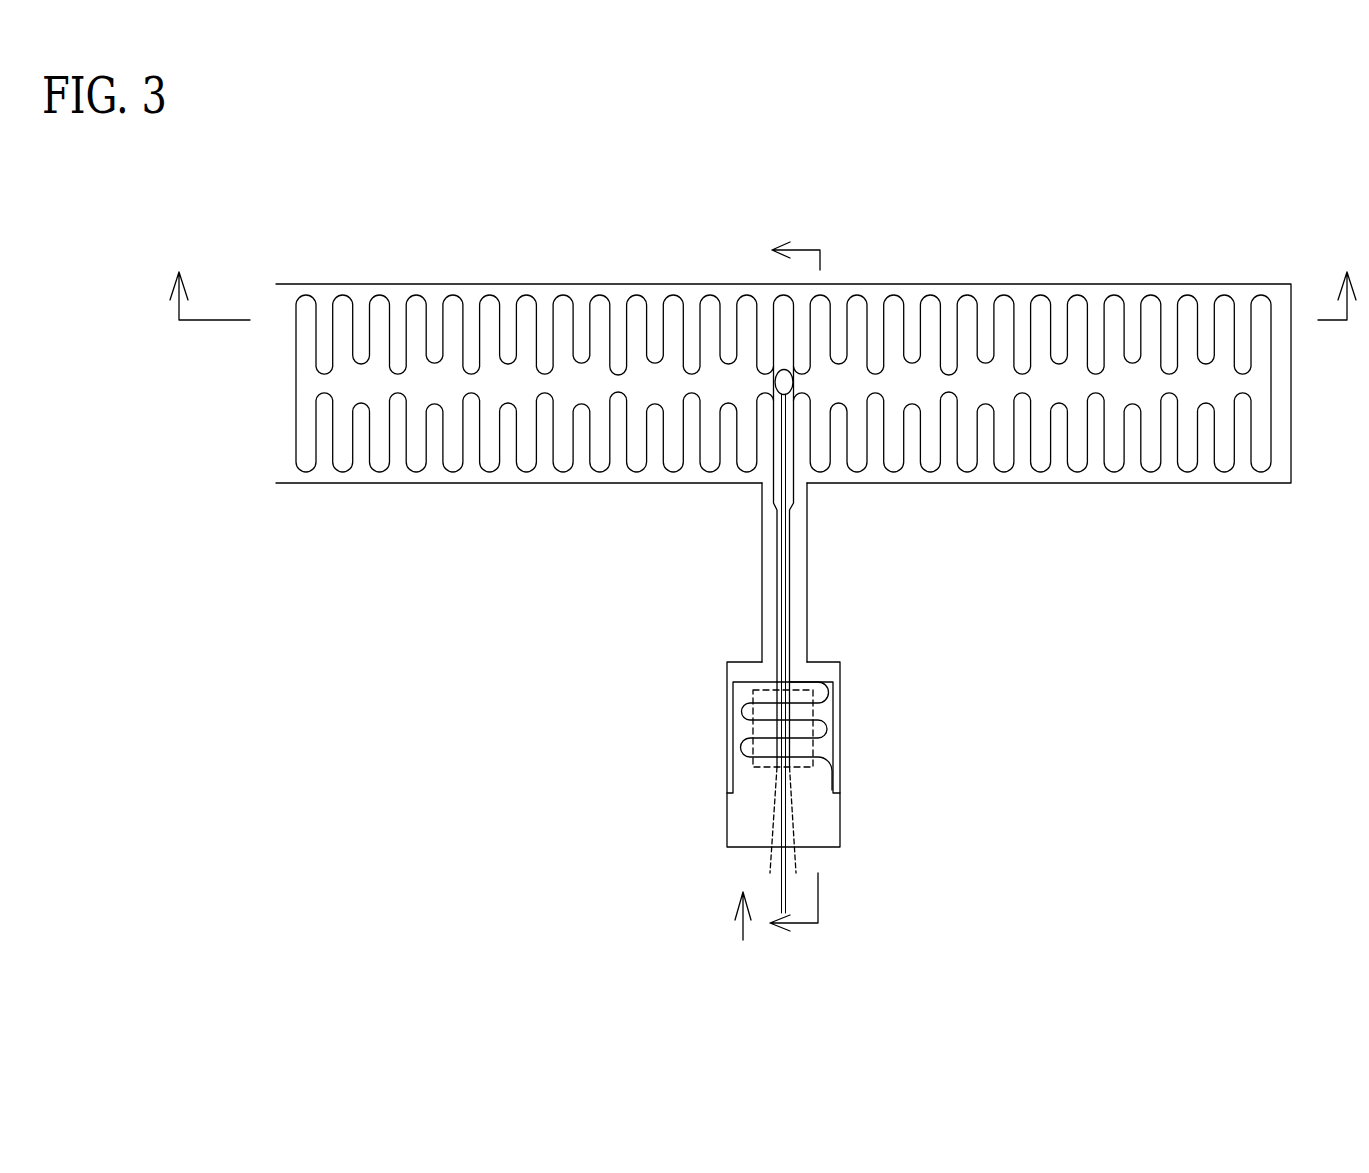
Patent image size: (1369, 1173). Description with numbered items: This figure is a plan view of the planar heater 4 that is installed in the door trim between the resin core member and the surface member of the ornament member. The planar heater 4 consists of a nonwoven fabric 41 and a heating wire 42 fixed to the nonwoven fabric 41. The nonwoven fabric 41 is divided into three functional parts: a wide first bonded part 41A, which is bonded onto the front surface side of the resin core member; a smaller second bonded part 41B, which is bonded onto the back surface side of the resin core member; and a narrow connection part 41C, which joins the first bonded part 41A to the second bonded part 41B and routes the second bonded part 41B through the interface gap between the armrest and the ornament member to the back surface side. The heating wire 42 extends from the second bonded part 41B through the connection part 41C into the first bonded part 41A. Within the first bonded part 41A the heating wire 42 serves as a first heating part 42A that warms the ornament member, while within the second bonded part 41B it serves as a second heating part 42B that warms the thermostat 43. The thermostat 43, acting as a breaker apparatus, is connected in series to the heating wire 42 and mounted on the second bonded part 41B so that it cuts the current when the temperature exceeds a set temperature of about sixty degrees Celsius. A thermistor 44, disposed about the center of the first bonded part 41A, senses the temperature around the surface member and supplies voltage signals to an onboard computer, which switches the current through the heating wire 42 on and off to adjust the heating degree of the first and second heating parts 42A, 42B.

The planar heater 4 is at (1266, 226).
The nonwoven fabric 41 is at (985, 283).
The first bonded part 41A is at (1305, 285).
The second bonded part 41B is at (851, 678).
The connection part 41C is at (816, 497).
The heating wire 42 is at (772, 511).
The first heating part 42A is at (1114, 294).
The second heating part 42B is at (827, 689).
The thermostat 43 is at (752, 729).
The thermistor 44 is at (775, 382).